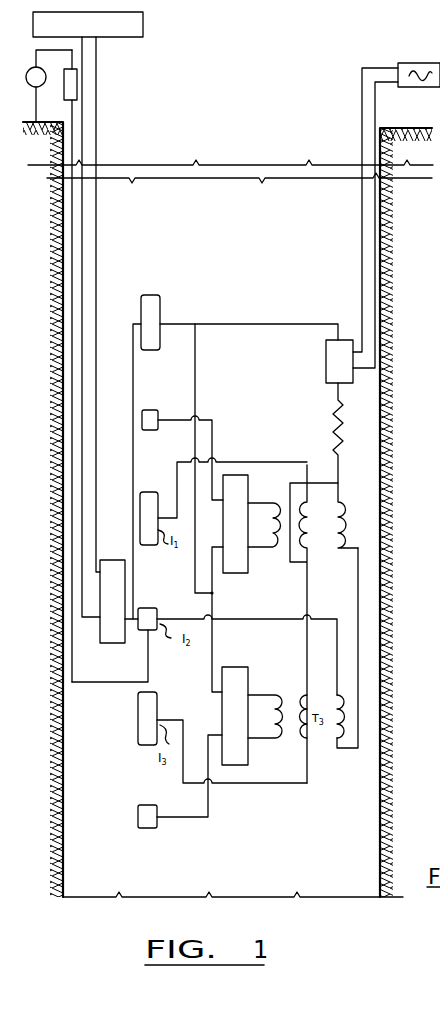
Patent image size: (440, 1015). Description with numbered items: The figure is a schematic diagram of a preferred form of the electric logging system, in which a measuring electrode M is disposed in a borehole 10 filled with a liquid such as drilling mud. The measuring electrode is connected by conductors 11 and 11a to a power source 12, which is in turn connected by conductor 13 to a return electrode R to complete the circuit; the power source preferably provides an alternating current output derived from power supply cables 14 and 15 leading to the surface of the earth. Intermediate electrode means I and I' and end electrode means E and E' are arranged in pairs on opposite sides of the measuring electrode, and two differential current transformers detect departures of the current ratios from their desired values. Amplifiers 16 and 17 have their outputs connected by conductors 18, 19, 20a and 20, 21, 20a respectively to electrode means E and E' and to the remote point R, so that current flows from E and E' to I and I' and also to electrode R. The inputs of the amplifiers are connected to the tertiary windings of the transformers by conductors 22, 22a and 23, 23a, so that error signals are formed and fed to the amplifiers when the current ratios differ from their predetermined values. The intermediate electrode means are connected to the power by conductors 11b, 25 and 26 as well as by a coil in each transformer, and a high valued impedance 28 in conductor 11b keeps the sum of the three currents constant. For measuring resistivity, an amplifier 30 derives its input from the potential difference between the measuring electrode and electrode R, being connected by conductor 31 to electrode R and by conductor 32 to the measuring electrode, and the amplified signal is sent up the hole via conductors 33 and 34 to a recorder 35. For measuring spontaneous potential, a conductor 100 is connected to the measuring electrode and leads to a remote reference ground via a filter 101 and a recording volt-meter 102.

The borehole 10 is at (238, 242).
The conductor 11 is at (358, 591).
The conductor 11a is at (237, 619).
The conductor 11b is at (327, 481).
The power source 12 is at (326, 371).
The conductor 13 is at (252, 326).
The power supply cable 14 is at (362, 245).
The power supply cable 15 is at (375, 222).
The amplifier 16 is at (253, 477).
The amplifier 17 is at (250, 669).
The conductor 18 is at (200, 418).
The conductor 19 is at (212, 555).
The conductor 20 is at (214, 652).
The conductor 20a is at (197, 350).
The conductor 21 is at (210, 803).
The conductor 22 is at (256, 500).
The conductor 22a is at (262, 551).
The conductor 23 is at (260, 739).
The conductor 23a is at (256, 695).
The conductor 25 is at (262, 464).
The conductor 26 is at (287, 786).
The high valued impedance 28 is at (346, 433).
The amplifier 30 is at (103, 645).
The conductor 31 is at (133, 443).
The conductor 32 is at (134, 612).
The conductor 33 is at (96, 247).
The conductor 34 is at (82, 217).
The recorder 35 is at (143, 34).
The conductor 100 is at (83, 683).
The filter 101 is at (77, 88).
The recording volt-meter 102 is at (43, 88).